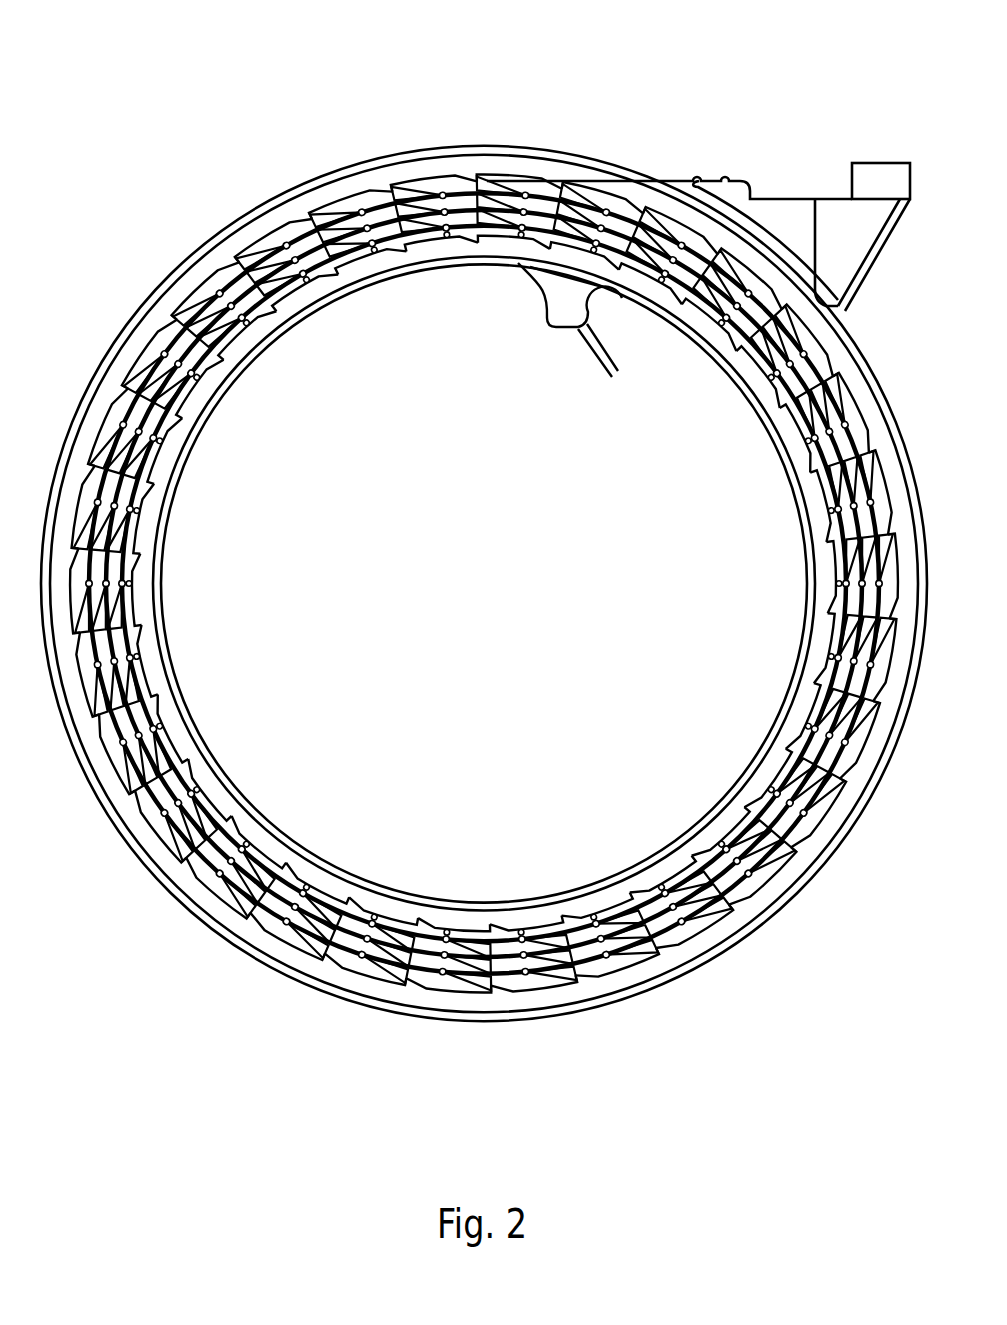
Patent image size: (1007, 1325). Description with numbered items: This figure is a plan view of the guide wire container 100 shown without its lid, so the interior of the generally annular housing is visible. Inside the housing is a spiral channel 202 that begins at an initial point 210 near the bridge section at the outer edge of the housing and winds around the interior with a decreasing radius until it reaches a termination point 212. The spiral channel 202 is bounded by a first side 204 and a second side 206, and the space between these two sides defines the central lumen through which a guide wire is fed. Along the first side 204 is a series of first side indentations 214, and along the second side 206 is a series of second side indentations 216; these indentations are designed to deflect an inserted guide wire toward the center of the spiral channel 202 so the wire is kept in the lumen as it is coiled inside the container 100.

The guide wire container 100 is at (142, 71).
The spiral channel 202 is at (455, 176).
The first side 204 is at (330, 176).
The second side 206 is at (253, 254).
The initial point 210 is at (608, 178).
The termination point 212 is at (743, 342).
The first side indentation 214 is at (300, 214).
The second side indentation 216 is at (413, 186).